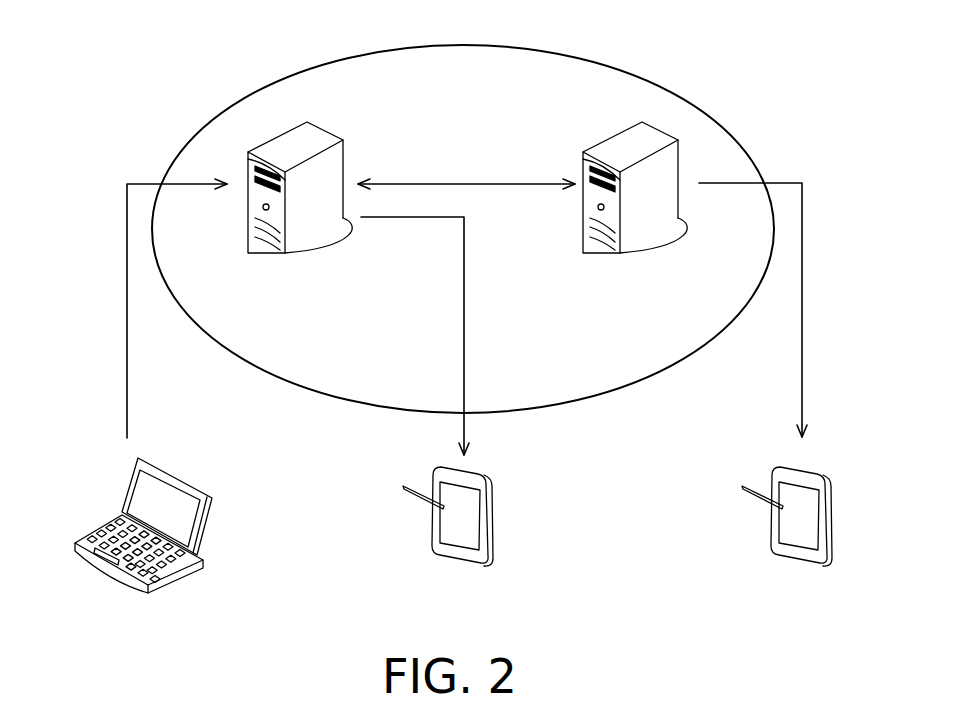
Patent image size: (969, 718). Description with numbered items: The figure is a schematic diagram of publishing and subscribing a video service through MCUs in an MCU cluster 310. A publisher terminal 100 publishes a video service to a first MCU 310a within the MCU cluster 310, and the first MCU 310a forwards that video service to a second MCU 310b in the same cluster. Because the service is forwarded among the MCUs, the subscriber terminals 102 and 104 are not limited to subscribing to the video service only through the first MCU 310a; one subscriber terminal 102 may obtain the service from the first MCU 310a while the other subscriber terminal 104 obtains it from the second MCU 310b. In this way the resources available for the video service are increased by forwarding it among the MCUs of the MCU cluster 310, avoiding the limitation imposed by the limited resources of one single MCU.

The publisher terminal 100 is at (178, 475).
The subscriber terminal 102 is at (497, 528).
The subscriber terminal 104 is at (835, 527).
The MCU cluster 310 is at (613, 67).
The first MCU 310a is at (327, 130).
The second MCU 310b is at (610, 133).